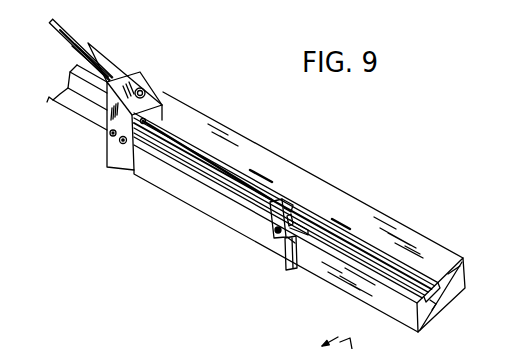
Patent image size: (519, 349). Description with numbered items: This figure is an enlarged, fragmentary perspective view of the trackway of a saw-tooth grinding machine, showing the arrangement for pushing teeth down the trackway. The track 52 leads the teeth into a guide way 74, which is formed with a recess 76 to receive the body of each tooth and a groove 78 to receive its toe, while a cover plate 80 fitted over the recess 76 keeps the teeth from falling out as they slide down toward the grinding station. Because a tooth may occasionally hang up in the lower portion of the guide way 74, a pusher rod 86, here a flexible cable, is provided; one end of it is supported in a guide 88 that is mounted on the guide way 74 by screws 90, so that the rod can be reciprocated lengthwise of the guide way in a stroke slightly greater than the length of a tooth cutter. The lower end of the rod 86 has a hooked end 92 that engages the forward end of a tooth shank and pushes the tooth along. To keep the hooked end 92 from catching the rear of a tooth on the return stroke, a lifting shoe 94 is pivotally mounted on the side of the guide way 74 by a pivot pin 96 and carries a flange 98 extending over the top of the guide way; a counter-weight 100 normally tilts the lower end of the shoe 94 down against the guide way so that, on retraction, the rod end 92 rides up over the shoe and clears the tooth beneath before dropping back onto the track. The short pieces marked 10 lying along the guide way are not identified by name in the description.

The workpiece strip 10 is at (259, 166).
The track 52 is at (445, 244).
The guide way 74 is at (458, 292).
The recess 76 is at (456, 276).
The groove 78 is at (439, 310).
The cover plate 80 is at (391, 222).
The pusher rod 86 is at (60, 37).
The guide 88 is at (132, 82).
The screws 90 is at (121, 141).
The hooked end 92 is at (272, 199).
The lifting shoe 94 is at (280, 238).
The pivot pin 96 is at (275, 235).
The flange 98 is at (296, 226).
The counter-weight 100 is at (290, 269).